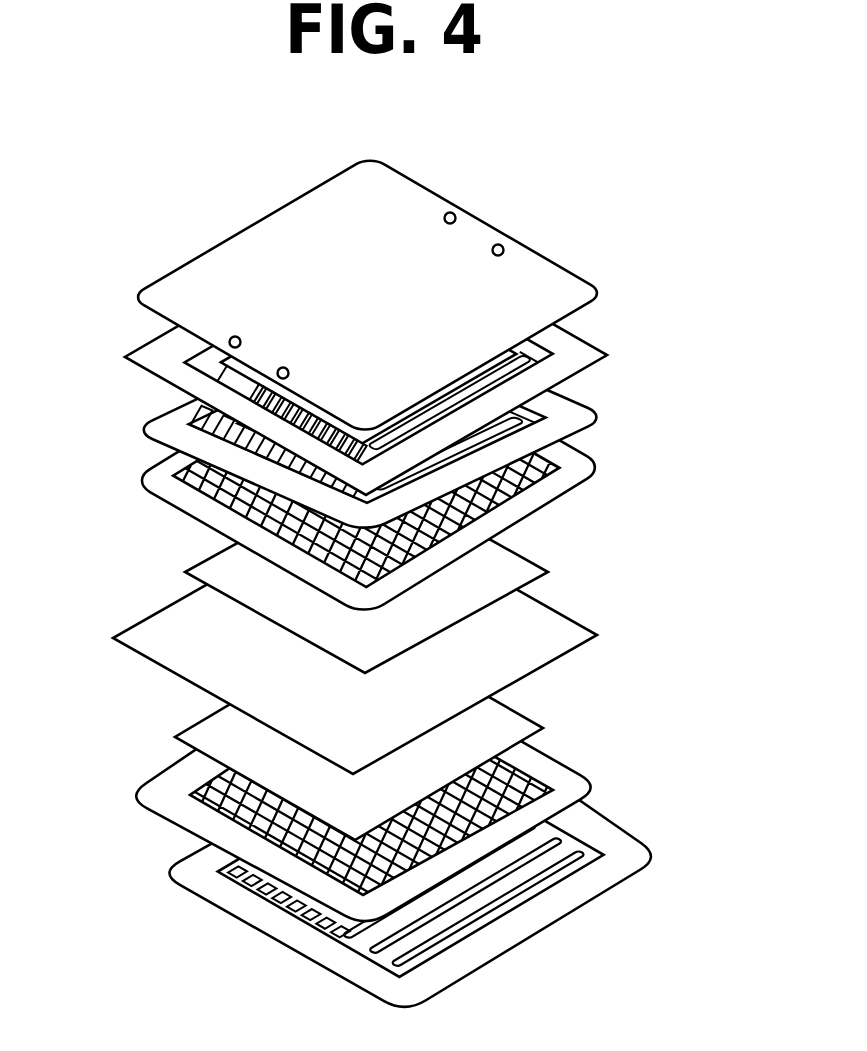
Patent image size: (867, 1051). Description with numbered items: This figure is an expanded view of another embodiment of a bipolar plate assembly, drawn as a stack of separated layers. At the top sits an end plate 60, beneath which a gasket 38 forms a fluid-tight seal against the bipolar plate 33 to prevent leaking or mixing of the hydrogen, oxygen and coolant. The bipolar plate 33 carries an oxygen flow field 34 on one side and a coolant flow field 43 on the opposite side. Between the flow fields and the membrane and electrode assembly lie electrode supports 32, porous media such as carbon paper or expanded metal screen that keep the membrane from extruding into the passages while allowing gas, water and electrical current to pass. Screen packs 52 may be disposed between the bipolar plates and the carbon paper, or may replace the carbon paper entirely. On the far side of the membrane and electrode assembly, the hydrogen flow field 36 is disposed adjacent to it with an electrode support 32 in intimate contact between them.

The end plate 60 is at (590, 281).
The gasket 38 is at (597, 345).
The coolant flow field 43 is at (341, 716).
The bipolar plate 33 is at (593, 405).
The oxygen flow field 34 is at (442, 423).
The screen pack 52 is at (425, 626).
The electrode support 32 is at (355, 655).
The hydrogen flow field 36 is at (222, 873).